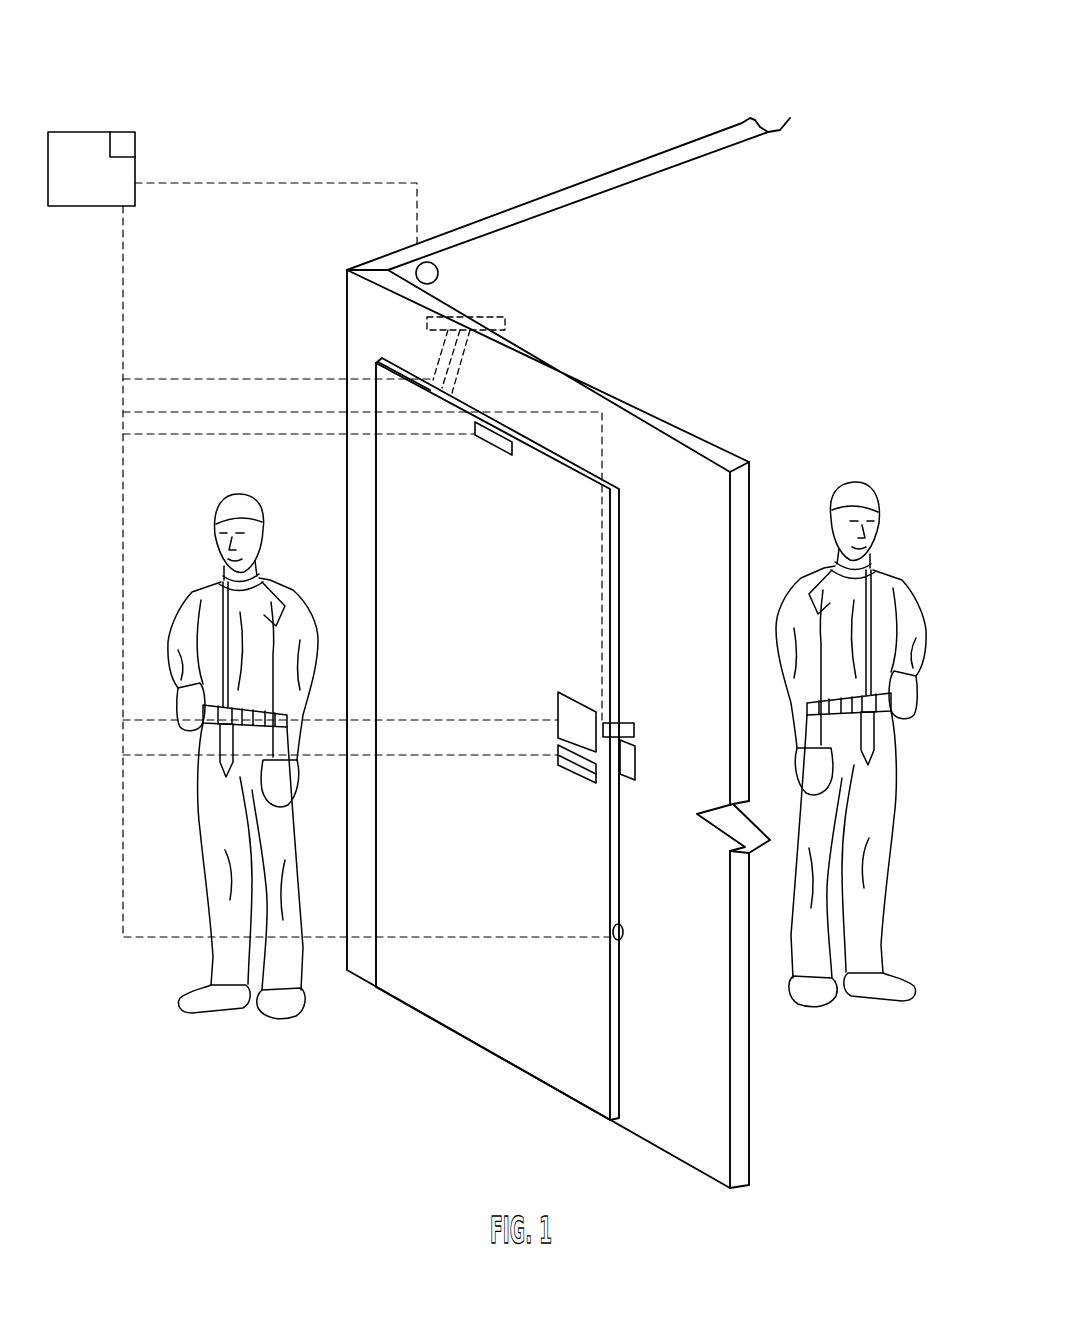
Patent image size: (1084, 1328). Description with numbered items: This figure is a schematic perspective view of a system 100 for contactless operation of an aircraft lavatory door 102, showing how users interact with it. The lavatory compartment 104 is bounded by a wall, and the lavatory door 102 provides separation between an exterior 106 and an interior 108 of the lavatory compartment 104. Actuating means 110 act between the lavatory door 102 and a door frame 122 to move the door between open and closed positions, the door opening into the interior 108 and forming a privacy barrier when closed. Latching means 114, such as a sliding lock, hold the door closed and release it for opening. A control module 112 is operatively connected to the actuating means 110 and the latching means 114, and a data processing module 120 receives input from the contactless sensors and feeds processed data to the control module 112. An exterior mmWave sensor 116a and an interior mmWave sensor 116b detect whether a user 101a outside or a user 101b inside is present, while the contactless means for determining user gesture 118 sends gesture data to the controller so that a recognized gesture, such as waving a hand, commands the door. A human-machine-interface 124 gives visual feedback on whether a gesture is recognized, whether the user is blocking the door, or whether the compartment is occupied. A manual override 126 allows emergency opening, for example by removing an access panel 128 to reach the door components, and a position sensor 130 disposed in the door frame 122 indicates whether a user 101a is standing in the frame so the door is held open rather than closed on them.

The system for contactless operation of an aircraft lavatory door 100 is at (491, 71).
The user 101a is at (262, 530).
The user 101b is at (871, 503).
The lavatory door 102 is at (415, 462).
The lavatory compartment 104 is at (357, 290).
The exterior 106 is at (224, 313).
The interior 108 is at (782, 275).
The actuating means 110 is at (455, 357).
The control module 112 is at (111, 193).
The latching means 114 is at (620, 728).
The exterior mmWave sensor 116a is at (495, 438).
The interior mmWave sensor 116b is at (427, 262).
The contactless means for determining user gesture 118 is at (573, 767).
The data processing module 120 is at (120, 150).
The door frame 122 is at (389, 363).
The human-machine-interface 124 is at (558, 703).
The manual override 126 is at (636, 772).
The access panel 128 is at (639, 740).
The position sensor 130 is at (622, 578).